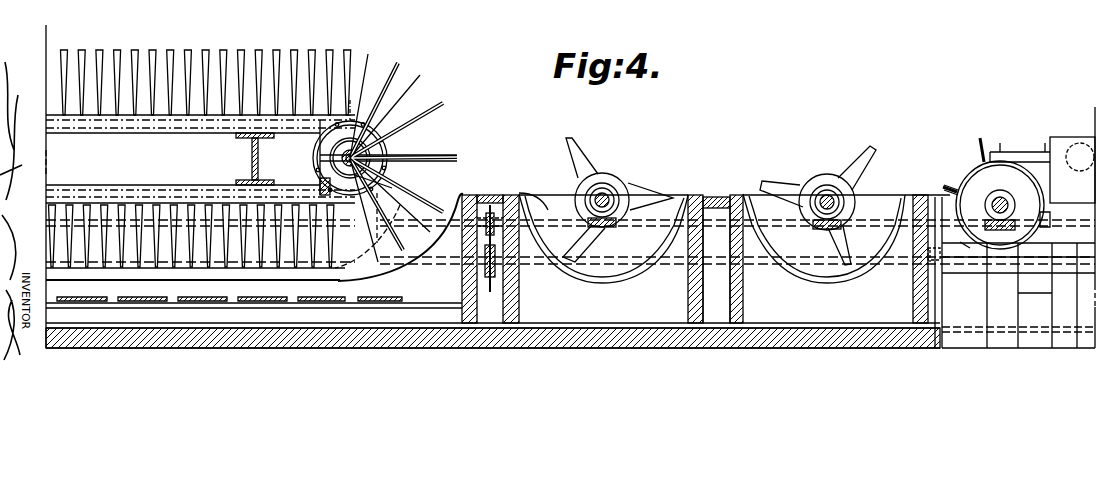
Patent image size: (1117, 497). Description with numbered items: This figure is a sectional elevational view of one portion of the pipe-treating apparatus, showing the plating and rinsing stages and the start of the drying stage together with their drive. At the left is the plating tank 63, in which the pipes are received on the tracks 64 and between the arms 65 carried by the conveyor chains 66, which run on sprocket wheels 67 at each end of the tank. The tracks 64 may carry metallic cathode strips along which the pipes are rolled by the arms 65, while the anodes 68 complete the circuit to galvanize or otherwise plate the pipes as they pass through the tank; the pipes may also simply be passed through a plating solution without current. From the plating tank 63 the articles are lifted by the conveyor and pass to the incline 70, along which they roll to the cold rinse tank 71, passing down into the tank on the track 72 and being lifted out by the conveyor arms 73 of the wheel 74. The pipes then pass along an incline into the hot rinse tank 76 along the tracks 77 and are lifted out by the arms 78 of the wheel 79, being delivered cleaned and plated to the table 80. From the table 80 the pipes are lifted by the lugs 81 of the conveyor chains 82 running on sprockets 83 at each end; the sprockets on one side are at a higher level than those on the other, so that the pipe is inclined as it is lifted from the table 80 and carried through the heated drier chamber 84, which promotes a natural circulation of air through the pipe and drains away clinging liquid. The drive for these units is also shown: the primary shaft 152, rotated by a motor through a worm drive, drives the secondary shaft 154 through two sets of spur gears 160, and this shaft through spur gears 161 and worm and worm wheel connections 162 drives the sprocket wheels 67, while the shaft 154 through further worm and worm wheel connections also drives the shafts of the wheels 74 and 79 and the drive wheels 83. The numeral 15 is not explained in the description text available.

The frame member 15 is at (712, 222).
The plating tank 63 is at (298, 330).
The tracks 64 is at (427, 240).
The arms 65 is at (241, 50).
The conveyor chains 66 is at (378, 118).
The sprocket wheels 67 is at (314, 158).
The anodes 68 is at (197, 302).
The incline 70 is at (500, 195).
The cold rinse tank 71 is at (537, 190).
The track 72 is at (604, 272).
The conveyor arms 73 is at (642, 195).
The wheel 74 is at (605, 180).
The hot rinse tank 76 is at (752, 195).
The tracks 77 is at (814, 272).
The arms 78 is at (870, 150).
The wheel 79 is at (818, 180).
The table 80 is at (920, 195).
The lugs 81 is at (950, 184).
The conveyor chains 82 is at (982, 140).
The sprockets 83 is at (1003, 196).
The drier chamber 84 is at (1065, 140).
The primary shaft 152 is at (668, 262).
The secondary shaft 154 is at (703, 195).
The spur gears 160 is at (505, 290).
The spur gears 161 is at (395, 190).
The worm and worm wheel connections 162 is at (395, 152).